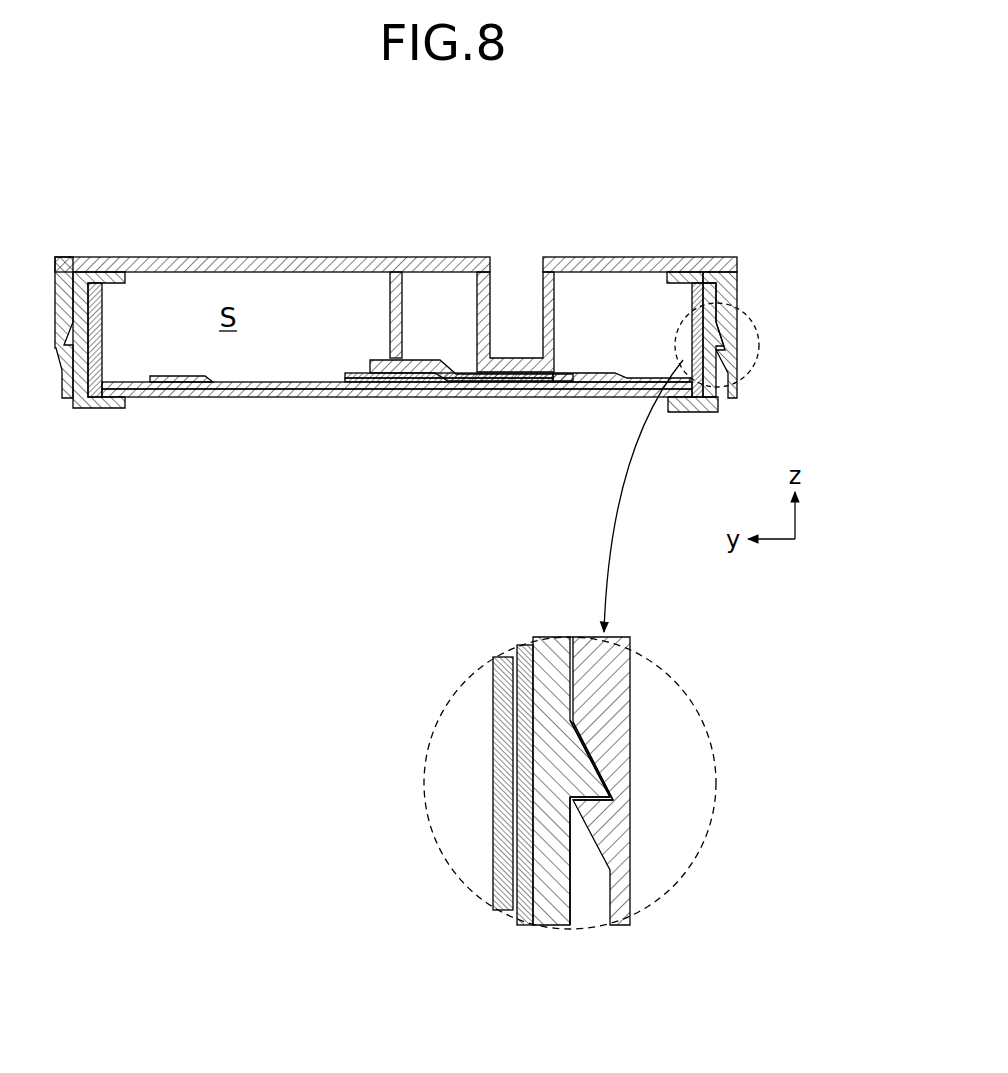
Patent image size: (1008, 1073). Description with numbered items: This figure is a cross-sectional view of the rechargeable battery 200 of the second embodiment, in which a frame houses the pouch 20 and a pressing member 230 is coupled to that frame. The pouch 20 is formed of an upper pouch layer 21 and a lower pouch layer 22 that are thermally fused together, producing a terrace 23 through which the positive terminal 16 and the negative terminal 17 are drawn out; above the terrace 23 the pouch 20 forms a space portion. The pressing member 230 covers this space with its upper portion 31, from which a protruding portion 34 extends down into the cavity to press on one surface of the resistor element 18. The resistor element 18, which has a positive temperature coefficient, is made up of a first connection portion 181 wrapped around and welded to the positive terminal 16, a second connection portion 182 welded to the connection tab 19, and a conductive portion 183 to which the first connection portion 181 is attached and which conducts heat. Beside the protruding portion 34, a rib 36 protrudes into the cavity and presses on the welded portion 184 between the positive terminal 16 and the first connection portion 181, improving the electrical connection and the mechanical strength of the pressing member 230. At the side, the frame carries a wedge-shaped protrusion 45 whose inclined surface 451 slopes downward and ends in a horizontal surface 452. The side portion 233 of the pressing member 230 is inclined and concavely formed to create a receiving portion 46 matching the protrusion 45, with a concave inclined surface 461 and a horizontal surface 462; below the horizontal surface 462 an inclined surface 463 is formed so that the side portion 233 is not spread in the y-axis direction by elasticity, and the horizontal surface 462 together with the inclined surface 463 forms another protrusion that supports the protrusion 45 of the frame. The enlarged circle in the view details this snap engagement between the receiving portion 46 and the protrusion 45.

The rechargeable battery 200 is at (361, 165).
The pressing member 230 is at (386, 295).
The upper portion 31 is at (262, 257).
The rib 36 is at (420, 257).
The protruding portion 34 is at (523, 257).
The pouch 20 is at (603, 539).
The upper pouch layer 21 is at (697, 290).
The lower pouch layer 22 is at (712, 290).
The side portion 233 is at (723, 300).
The protrusion 45 is at (628, 616).
The inclined surface 451 is at (600, 762).
The horizontal surface 452 is at (600, 805).
The receiving portion 46 is at (459, 822).
The inclined surface 461 is at (580, 757).
The horizontal surface 462 is at (585, 790).
The inclined surface 463 is at (588, 845).
The connection tab 19 is at (645, 372).
The negative terminal 17 is at (177, 397).
The terrace 23 is at (284, 377).
The welded portion 184 is at (377, 356).
The positive terminal 16 is at (388, 397).
The resistor element 18 is at (397, 440).
The first connection portion 181 is at (458, 397).
The conductive portion 183 is at (520, 397).
The second connection portion 182 is at (438, 464).